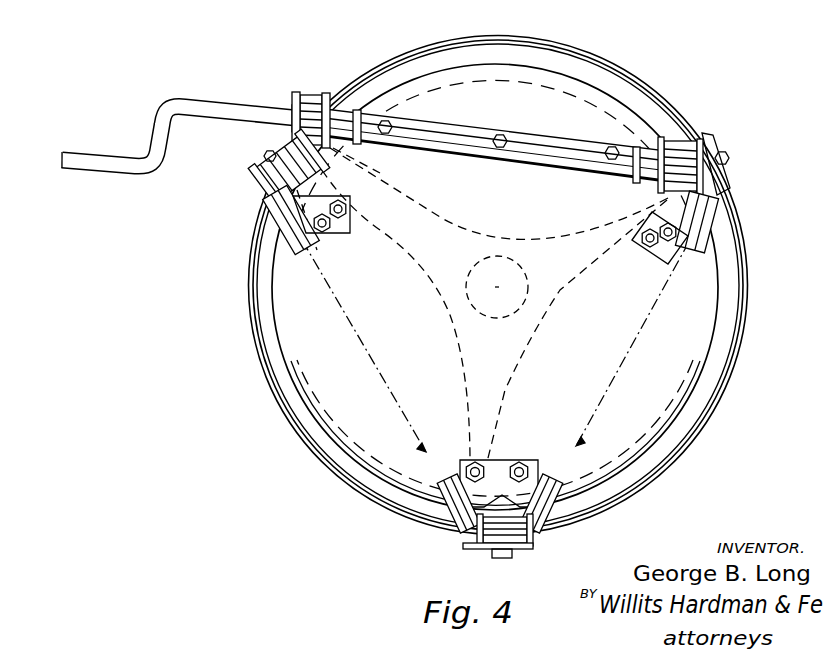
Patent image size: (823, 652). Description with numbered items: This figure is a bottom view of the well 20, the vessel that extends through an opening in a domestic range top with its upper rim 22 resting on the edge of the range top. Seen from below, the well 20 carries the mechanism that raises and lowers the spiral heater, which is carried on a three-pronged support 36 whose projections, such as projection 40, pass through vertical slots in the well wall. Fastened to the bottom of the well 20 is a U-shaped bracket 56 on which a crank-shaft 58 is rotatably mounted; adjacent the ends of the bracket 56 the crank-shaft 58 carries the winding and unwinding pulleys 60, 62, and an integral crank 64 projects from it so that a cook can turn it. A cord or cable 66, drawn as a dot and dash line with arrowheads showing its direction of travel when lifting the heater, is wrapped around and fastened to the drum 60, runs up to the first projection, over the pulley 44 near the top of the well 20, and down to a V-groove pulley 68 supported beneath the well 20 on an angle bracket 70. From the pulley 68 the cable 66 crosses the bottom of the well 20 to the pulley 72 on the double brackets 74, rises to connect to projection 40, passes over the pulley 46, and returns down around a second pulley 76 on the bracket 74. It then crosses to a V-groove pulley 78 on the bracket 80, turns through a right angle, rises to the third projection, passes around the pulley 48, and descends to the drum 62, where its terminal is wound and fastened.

The well 20 is at (720, 312).
The upper rim 22 is at (741, 355).
The three-pronged support 36 is at (537, 325).
The projection 40 is at (467, 544).
The pulley 44 is at (265, 190).
The pulley 46 is at (530, 549).
The pulley 48 is at (727, 110).
The U-shaped bracket 56 is at (361, 110).
The crank-shaft 58 is at (505, 138).
The winding pulley 60 is at (316, 92).
The unwinding pulley 62 is at (686, 137).
The crank 64 is at (79, 155).
The cord or cable 66 is at (327, 284).
The V-groove pulley 68 is at (276, 208).
The angle bracket 70 is at (341, 232).
The pulley 72 is at (436, 498).
The double brackets 74 is at (503, 468).
The second pulley 76 is at (576, 503).
The V-groove pulley 78 is at (717, 210).
The bracket 80 is at (657, 254).